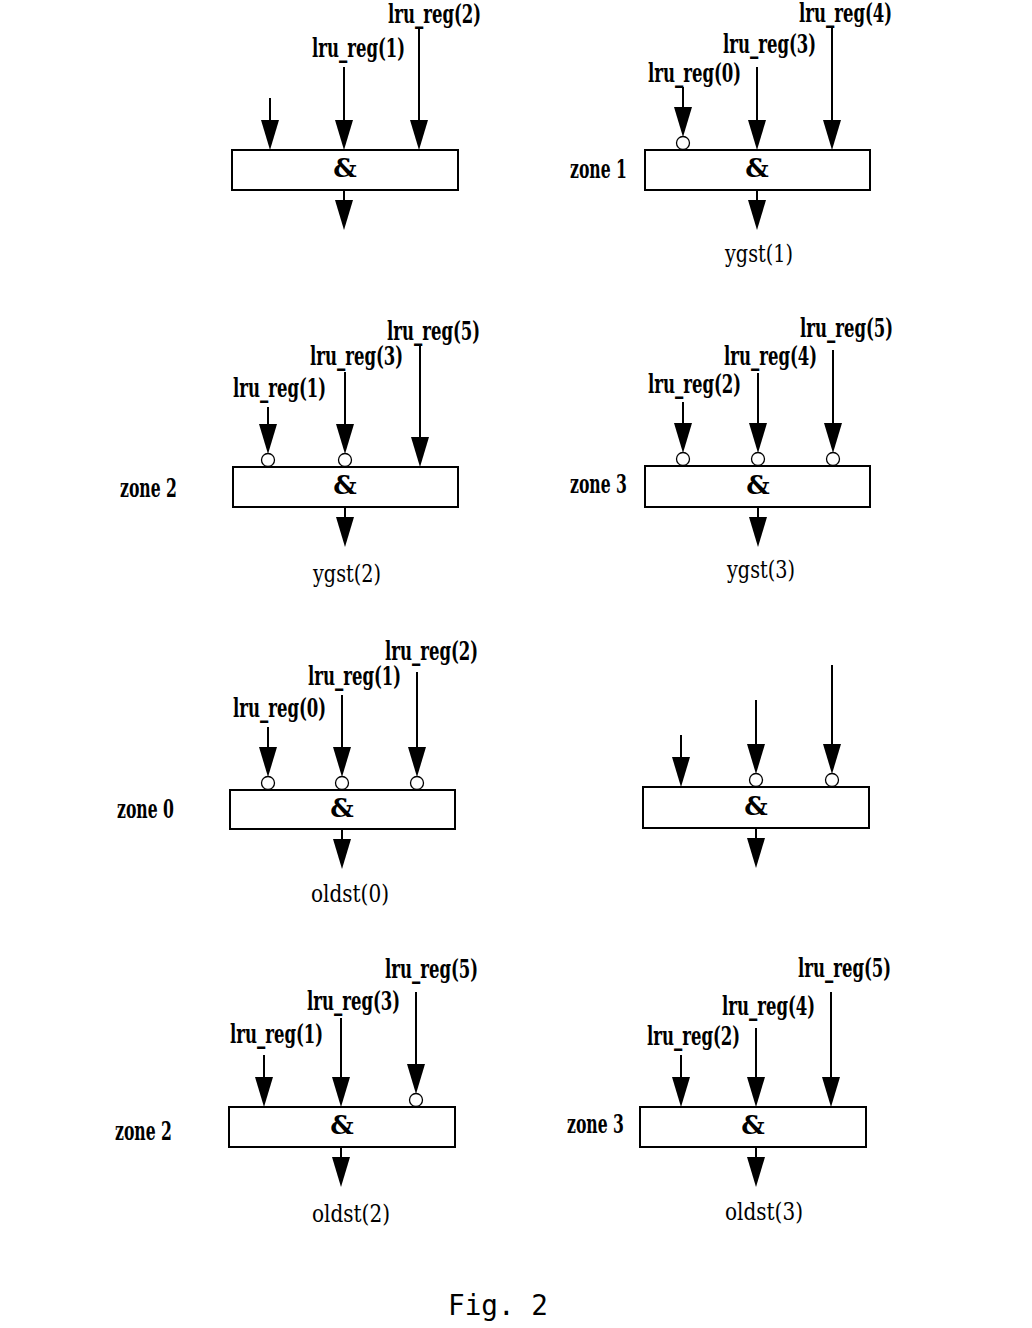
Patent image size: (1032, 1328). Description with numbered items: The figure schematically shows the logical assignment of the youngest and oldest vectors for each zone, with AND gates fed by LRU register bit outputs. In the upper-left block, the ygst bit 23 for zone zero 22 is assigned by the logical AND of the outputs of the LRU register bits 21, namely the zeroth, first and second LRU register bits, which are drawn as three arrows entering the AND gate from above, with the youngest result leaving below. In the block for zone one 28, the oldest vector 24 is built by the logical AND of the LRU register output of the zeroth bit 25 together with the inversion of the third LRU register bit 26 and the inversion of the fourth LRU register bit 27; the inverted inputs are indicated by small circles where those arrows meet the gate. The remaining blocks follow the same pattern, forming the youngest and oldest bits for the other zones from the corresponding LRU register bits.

The LRU register bits lru_reg(0), lru_reg(1), lru_reg(2) 21 is at (223, 82).
The zone0 22 is at (103, 172).
The ygst(0) bit 23 is at (292, 258).
The oldest vector oldst(1) 24 is at (713, 887).
The LRU register bit lru_reg(0) 25 is at (635, 712).
The LRU register bit lru_reg(3) 26 is at (713, 685).
The LRU register bit lru_reg(4) 27 is at (787, 649).
The zone1 28 is at (550, 812).